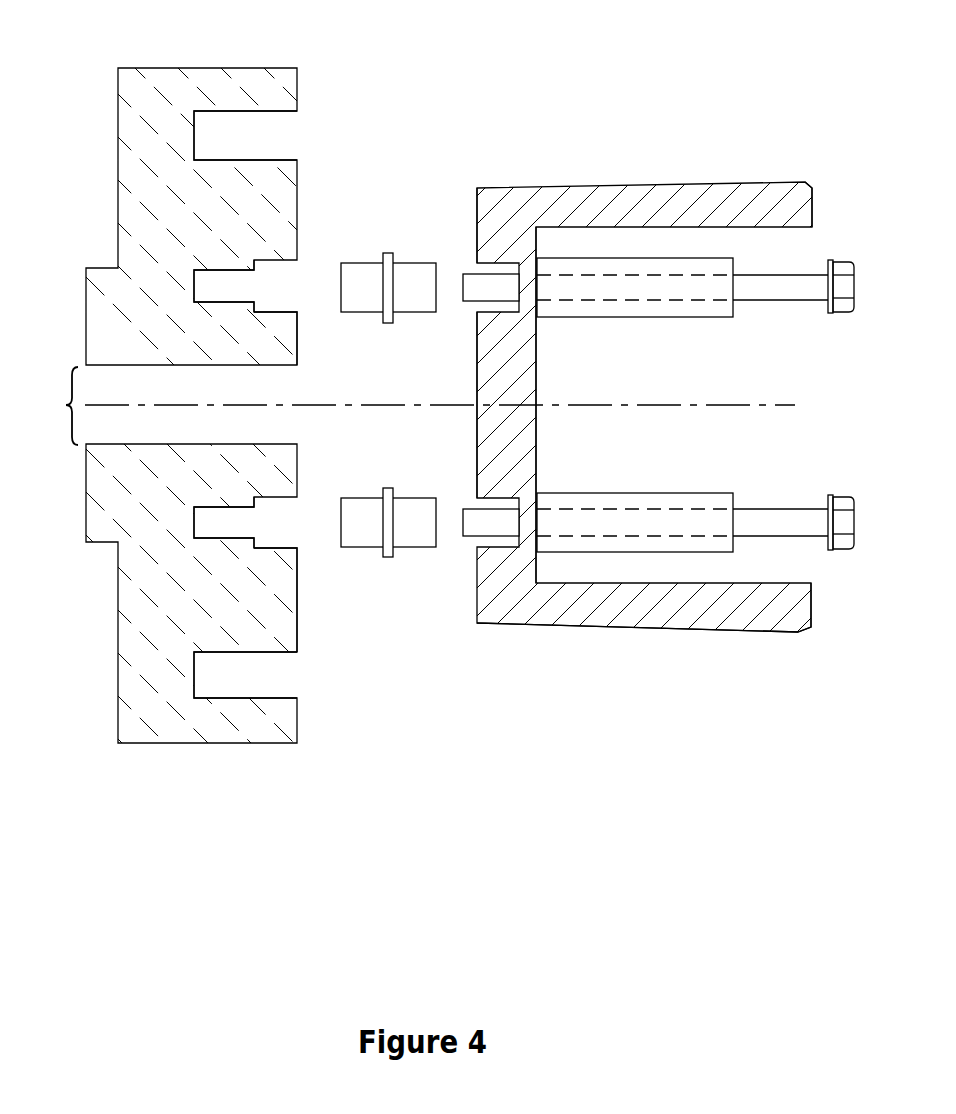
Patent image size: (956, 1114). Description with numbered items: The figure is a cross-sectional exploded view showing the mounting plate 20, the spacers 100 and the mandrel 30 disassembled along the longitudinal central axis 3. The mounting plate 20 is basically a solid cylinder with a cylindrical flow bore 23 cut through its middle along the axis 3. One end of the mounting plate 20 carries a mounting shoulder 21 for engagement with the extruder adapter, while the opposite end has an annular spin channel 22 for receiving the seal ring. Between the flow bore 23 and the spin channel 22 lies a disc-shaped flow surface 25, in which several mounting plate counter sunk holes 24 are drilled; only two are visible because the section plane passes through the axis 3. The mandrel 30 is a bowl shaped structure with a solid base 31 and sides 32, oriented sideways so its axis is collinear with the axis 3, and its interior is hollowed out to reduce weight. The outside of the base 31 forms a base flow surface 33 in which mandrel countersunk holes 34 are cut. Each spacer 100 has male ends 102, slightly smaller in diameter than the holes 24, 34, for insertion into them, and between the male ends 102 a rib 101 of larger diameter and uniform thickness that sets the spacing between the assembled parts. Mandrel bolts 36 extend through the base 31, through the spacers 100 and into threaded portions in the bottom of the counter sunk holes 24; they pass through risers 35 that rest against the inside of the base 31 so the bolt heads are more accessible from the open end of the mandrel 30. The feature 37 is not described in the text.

The longitudinal central axis 3 is at (670, 405).
The mounting plate 20 is at (117, 46).
The mounting shoulder 21 is at (85, 305).
The annular spin channel 22 is at (280, 138).
The cylindrical flow bore 23 is at (68, 404).
The mounting plate counter sunk holes 24 is at (290, 288).
The disc-shaped flow surface 25 is at (297, 330).
The mandrel 30 is at (761, 163).
The base 31 is at (489, 580).
The sides 32 is at (710, 620).
The base flow surface 33 is at (477, 212).
The mandrel countersunk holes 34 is at (474, 307).
The risers 35 is at (675, 492).
The mandrel bolts 36 is at (765, 302).
The chamfer 37 is at (807, 630).
The spacers 100 is at (390, 522).
The rib 101 is at (395, 557).
The male ends 102 is at (412, 262).